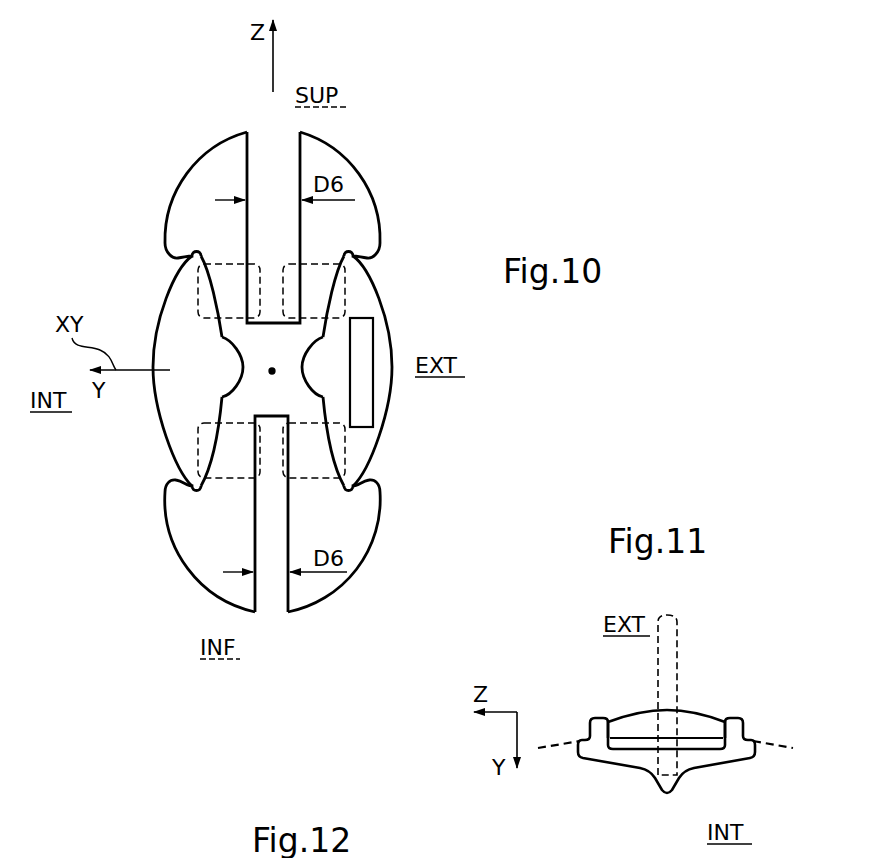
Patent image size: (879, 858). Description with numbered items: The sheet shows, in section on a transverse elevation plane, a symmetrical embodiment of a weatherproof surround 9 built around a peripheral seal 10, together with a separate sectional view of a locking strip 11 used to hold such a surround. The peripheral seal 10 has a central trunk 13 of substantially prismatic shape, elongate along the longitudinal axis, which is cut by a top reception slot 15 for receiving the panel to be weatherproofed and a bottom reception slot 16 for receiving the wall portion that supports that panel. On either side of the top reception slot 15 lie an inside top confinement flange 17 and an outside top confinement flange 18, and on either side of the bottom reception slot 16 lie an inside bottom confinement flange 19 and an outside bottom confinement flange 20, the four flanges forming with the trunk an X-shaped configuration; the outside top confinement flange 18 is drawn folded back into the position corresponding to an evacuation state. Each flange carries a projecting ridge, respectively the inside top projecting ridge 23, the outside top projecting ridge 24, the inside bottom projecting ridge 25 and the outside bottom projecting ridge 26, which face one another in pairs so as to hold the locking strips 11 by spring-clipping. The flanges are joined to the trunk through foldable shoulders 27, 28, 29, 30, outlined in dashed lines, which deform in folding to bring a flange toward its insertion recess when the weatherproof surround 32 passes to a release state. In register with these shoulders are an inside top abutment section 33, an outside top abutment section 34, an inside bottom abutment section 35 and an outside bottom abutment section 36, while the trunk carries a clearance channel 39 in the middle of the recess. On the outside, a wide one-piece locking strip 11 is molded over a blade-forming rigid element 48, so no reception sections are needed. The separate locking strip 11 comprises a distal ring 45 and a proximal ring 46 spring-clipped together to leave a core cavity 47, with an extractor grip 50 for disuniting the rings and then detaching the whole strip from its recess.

In FIG. 10, the weatherproof surround 9 is at (421, 127).
In FIG. 11, the peripheral seal 10 is at (785, 746).
In FIG. 10, the locking strip 11 is at (158, 402).
In FIG. 11, the locking strip 11 is at (767, 657).
In FIG. 10, the central trunk 13 is at (273, 355).
In FIG. 10, the top reception slot 15 is at (270, 140).
In FIG. 10, the bottom reception slot 16 is at (271, 616).
In FIG. 10, the inside top confinement flange 17 is at (184, 160).
In FIG. 10, the outside top confinement flange 18 is at (360, 160).
In FIG. 10, the inside bottom confinement flange 19 is at (194, 590).
In FIG. 10, the outside bottom confinement flange 20 is at (357, 582).
In FIG. 10, the inside top projecting ridge 23 is at (172, 258).
In FIG. 10, the outside top projecting ridge 24 is at (374, 252).
In FIG. 10, the inside bottom projecting ridge 25 is at (176, 489).
In FIG. 10, the outside bottom projecting ridge 26 is at (370, 490).
In FIG. 10, the foldable shoulder 27 is at (206, 296).
In FIG. 10, the foldable shoulder 28 is at (345, 297).
In FIG. 10, the foldable shoulder 29 is at (200, 455).
In FIG. 10, the foldable shoulder 30 is at (345, 455).
In FIG. 10, the weatherproof surround 32 is at (148, 620).
In FIG. 10, the inside top abutment section 33 is at (212, 305).
In FIG. 10, the outside top abutment section 34 is at (332, 303).
In FIG. 10, the inside bottom abutment section 35 is at (213, 442).
In FIG. 10, the outside bottom abutment section 36 is at (337, 442).
In FIG. 10, the clearance channel 39 is at (238, 372).
In FIG. 11, the distal ring 45 is at (633, 731).
In FIG. 11, the proximal ring 46 is at (637, 760).
In FIG. 11, the core cavity 47 is at (696, 745).
In FIG. 10, the blade-forming rigid element 48 is at (365, 347).
In FIG. 11, the extractor grip 50 is at (672, 632).